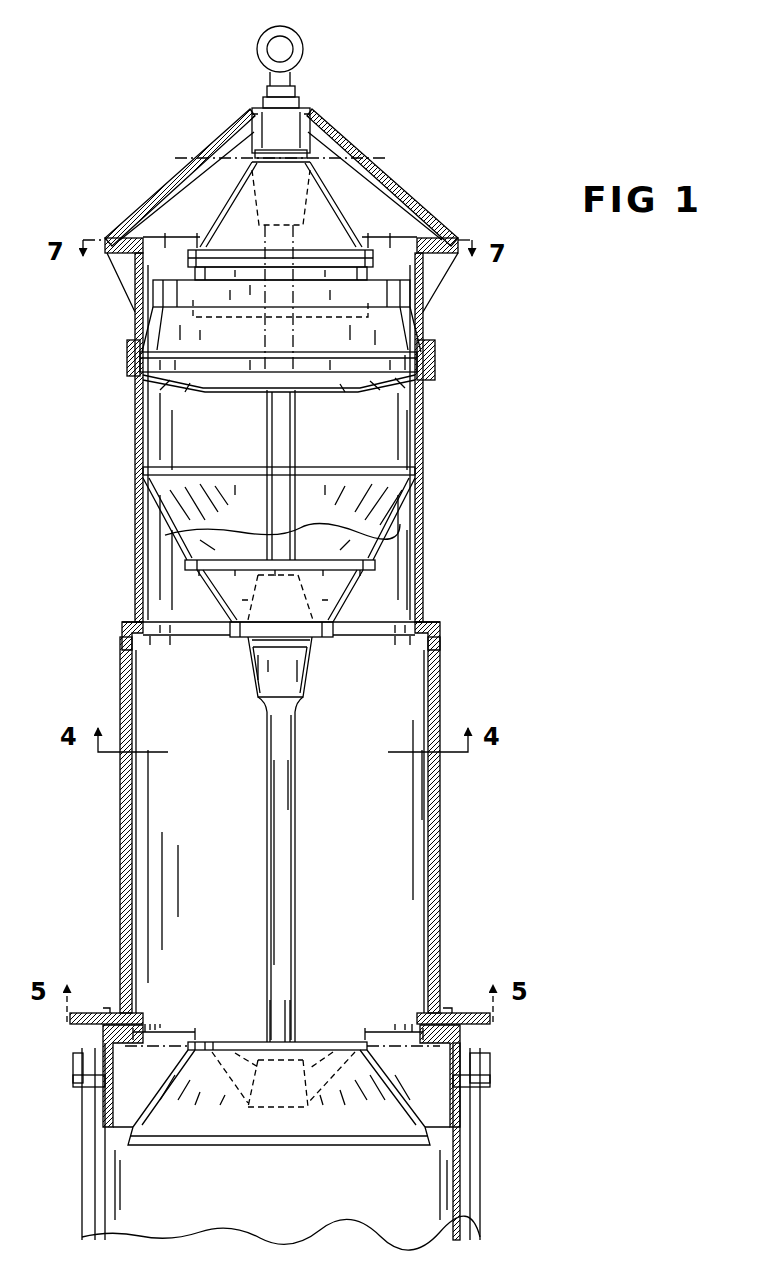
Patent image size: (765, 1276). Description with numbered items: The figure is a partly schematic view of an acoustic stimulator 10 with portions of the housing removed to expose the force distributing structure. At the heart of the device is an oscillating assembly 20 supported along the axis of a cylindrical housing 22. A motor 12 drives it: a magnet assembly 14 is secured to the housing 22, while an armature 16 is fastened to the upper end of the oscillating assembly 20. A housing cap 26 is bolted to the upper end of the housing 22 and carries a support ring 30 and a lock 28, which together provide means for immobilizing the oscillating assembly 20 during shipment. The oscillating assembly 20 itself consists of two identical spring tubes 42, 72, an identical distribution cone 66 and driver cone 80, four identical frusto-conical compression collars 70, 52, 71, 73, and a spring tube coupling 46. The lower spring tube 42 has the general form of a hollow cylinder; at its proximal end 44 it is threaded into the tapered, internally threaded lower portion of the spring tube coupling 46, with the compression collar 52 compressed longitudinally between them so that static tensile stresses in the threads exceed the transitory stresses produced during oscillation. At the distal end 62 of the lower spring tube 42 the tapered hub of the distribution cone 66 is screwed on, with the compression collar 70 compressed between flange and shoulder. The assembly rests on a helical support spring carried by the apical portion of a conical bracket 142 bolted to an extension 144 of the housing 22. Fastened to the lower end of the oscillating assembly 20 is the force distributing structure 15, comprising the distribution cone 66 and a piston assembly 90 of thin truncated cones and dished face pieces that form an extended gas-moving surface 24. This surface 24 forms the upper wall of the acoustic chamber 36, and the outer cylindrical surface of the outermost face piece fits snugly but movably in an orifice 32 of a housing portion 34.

The acoustic stimulator 10 is at (560, 428).
The motor 12 is at (380, 325).
The magnet assembly 14 is at (395, 340).
The force distributing structure 15 is at (208, 1022).
The armature 16 is at (382, 255).
The oscillating assembly 20 is at (300, 447).
The cylindrical housing 22 is at (135, 580).
The extended surface 24 is at (212, 1148).
The housing cap 26 is at (157, 190).
The lock 28 is at (253, 153).
The support ring 30 is at (257, 47).
The orifice 32 is at (422, 1138).
The housing portion 34 is at (456, 1106).
The acoustic chamber 36 is at (408, 1207).
The lower spring tube 42 is at (267, 910).
The proximal end 44 is at (310, 704).
The spring tube coupling 46 is at (300, 642).
The compression collar 52 is at (254, 676).
The distal end 62 is at (308, 1034).
The distribution cone 66 is at (330, 1075).
The compression collar 70 is at (235, 1042).
The compression collar 71 is at (216, 600).
The spring tube 72 is at (267, 430).
The compression collar 73 is at (228, 200).
The driver cone 80 is at (337, 205).
The piston assembly 90 is at (366, 1080).
The conical bracket 142 is at (345, 600).
The extension 144 is at (382, 515).